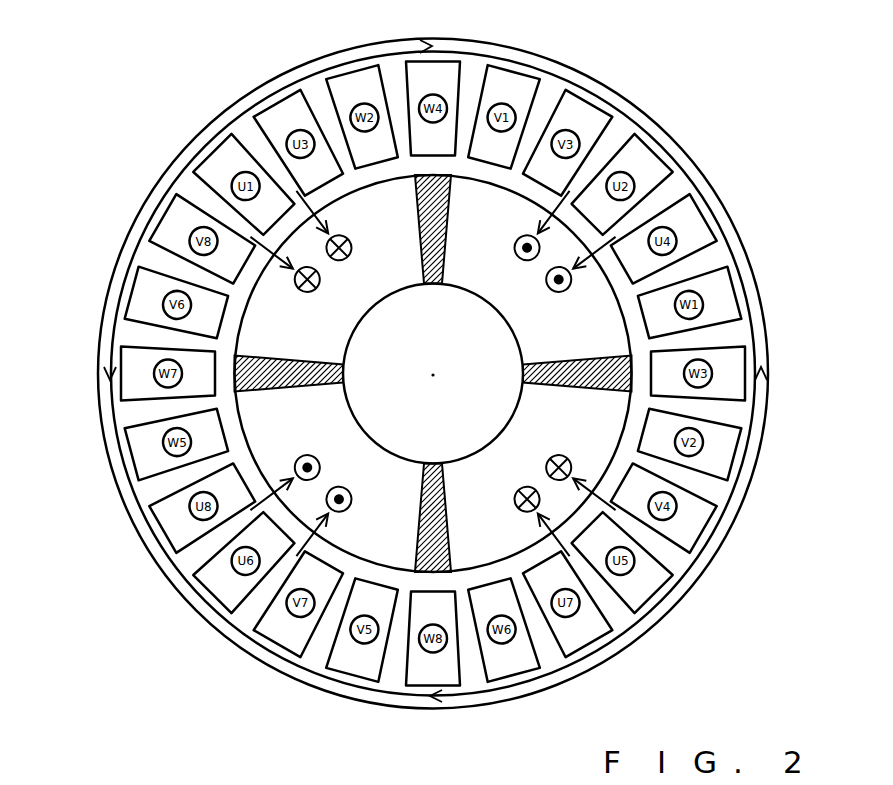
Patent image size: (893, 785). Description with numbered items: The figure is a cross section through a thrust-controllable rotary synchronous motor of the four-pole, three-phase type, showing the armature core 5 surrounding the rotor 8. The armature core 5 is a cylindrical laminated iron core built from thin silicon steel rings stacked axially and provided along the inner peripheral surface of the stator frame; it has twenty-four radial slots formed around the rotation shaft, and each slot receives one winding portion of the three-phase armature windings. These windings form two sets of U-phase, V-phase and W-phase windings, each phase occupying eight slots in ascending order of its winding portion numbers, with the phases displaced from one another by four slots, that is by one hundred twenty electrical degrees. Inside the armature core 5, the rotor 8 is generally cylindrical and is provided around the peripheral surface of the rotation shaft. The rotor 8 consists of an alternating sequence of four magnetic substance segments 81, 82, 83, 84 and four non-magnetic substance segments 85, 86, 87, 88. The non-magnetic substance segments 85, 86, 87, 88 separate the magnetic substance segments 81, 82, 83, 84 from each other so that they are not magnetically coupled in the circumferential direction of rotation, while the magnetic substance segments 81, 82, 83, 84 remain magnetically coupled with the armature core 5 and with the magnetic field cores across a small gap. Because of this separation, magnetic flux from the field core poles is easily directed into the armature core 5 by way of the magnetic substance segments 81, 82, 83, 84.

The armature core 5 is at (630, 128).
The rotor 8 is at (637, 347).
The magnetic substance segment 81 is at (563, 307).
The magnetic substance segment 82 is at (587, 440).
The magnetic substance segment 83 is at (277, 440).
The magnetic substance segment 84 is at (258, 292).
The non-magnetic substance segment 85 is at (441, 184).
The non-magnetic substance segment 86 is at (631, 388).
The non-magnetic substance segment 87 is at (440, 560).
The non-magnetic substance segment 88 is at (250, 380).